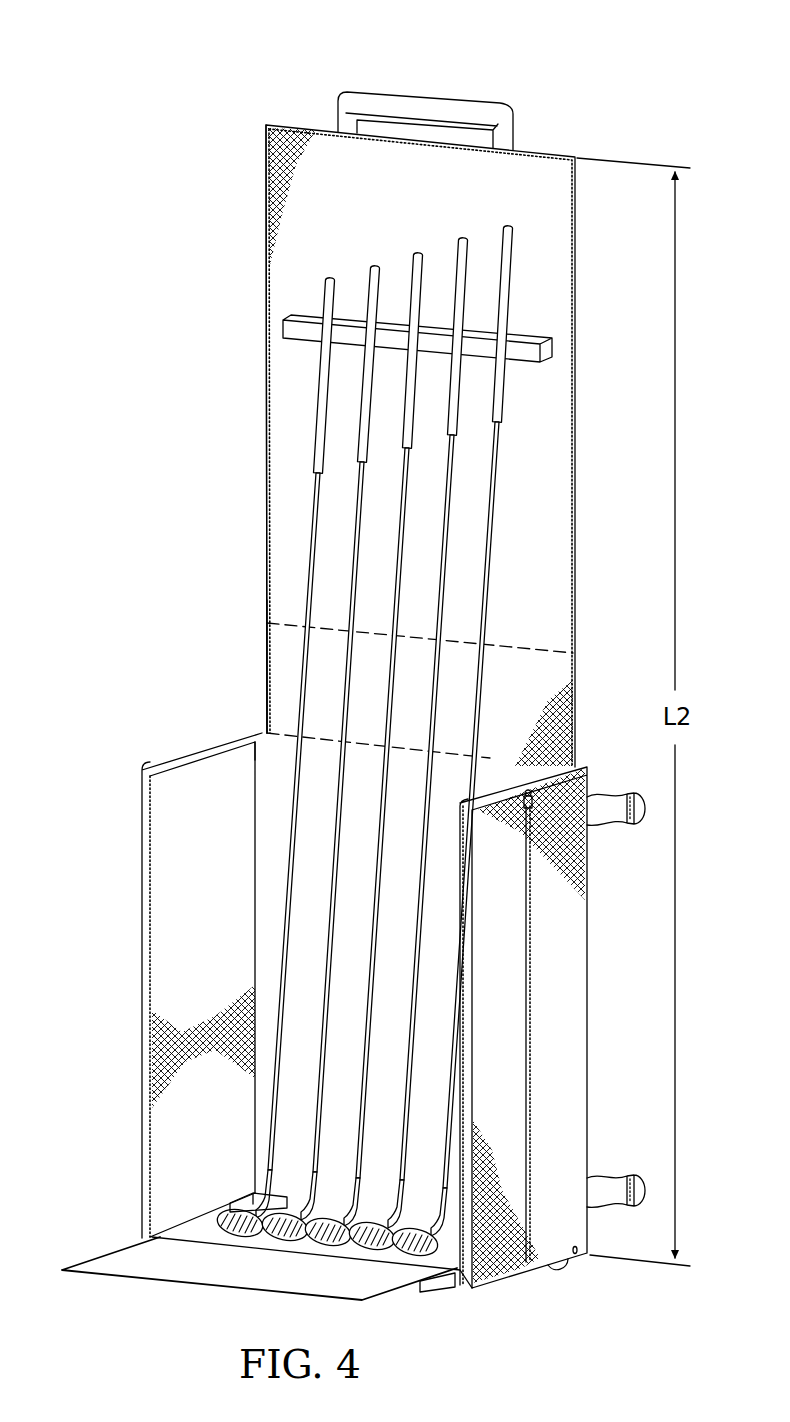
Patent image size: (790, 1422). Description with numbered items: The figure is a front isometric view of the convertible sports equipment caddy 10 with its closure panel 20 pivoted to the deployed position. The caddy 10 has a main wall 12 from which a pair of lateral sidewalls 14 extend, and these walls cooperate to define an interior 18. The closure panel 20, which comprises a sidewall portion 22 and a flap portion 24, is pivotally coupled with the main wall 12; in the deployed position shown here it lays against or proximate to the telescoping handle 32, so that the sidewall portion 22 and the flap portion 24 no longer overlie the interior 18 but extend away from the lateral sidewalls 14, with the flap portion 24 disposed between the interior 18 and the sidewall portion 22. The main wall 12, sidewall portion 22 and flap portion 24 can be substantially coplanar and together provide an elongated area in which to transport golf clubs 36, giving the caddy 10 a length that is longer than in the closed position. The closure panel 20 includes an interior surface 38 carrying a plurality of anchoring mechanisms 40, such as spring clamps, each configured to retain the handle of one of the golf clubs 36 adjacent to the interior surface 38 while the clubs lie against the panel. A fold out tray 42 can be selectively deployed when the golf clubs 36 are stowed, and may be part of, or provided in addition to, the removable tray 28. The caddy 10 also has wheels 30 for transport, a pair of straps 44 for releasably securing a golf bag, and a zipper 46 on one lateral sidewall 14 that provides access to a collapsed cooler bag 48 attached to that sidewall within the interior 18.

The convertible sports equipment caddy 10 is at (146, 70).
The main wall 12 is at (268, 752).
The lateral sidewalls 14 is at (150, 860).
The interior 18 is at (200, 958).
The closure panel 20 is at (258, 460).
The sidewall portion 22 is at (272, 665).
The flap portion 24 is at (280, 380).
The removable tray 28 is at (440, 1300).
The wheels 30 is at (560, 1272).
The telescoping handle 32 is at (451, 96).
The golf clubs 36 is at (307, 570).
The interior surface 38 is at (352, 214).
The anchoring mechanisms 40 is at (522, 340).
The fold out tray 42 is at (117, 1263).
The straps 44 is at (605, 797).
The zipper 46 is at (533, 1048).
The cooler bag 48 is at (513, 762).